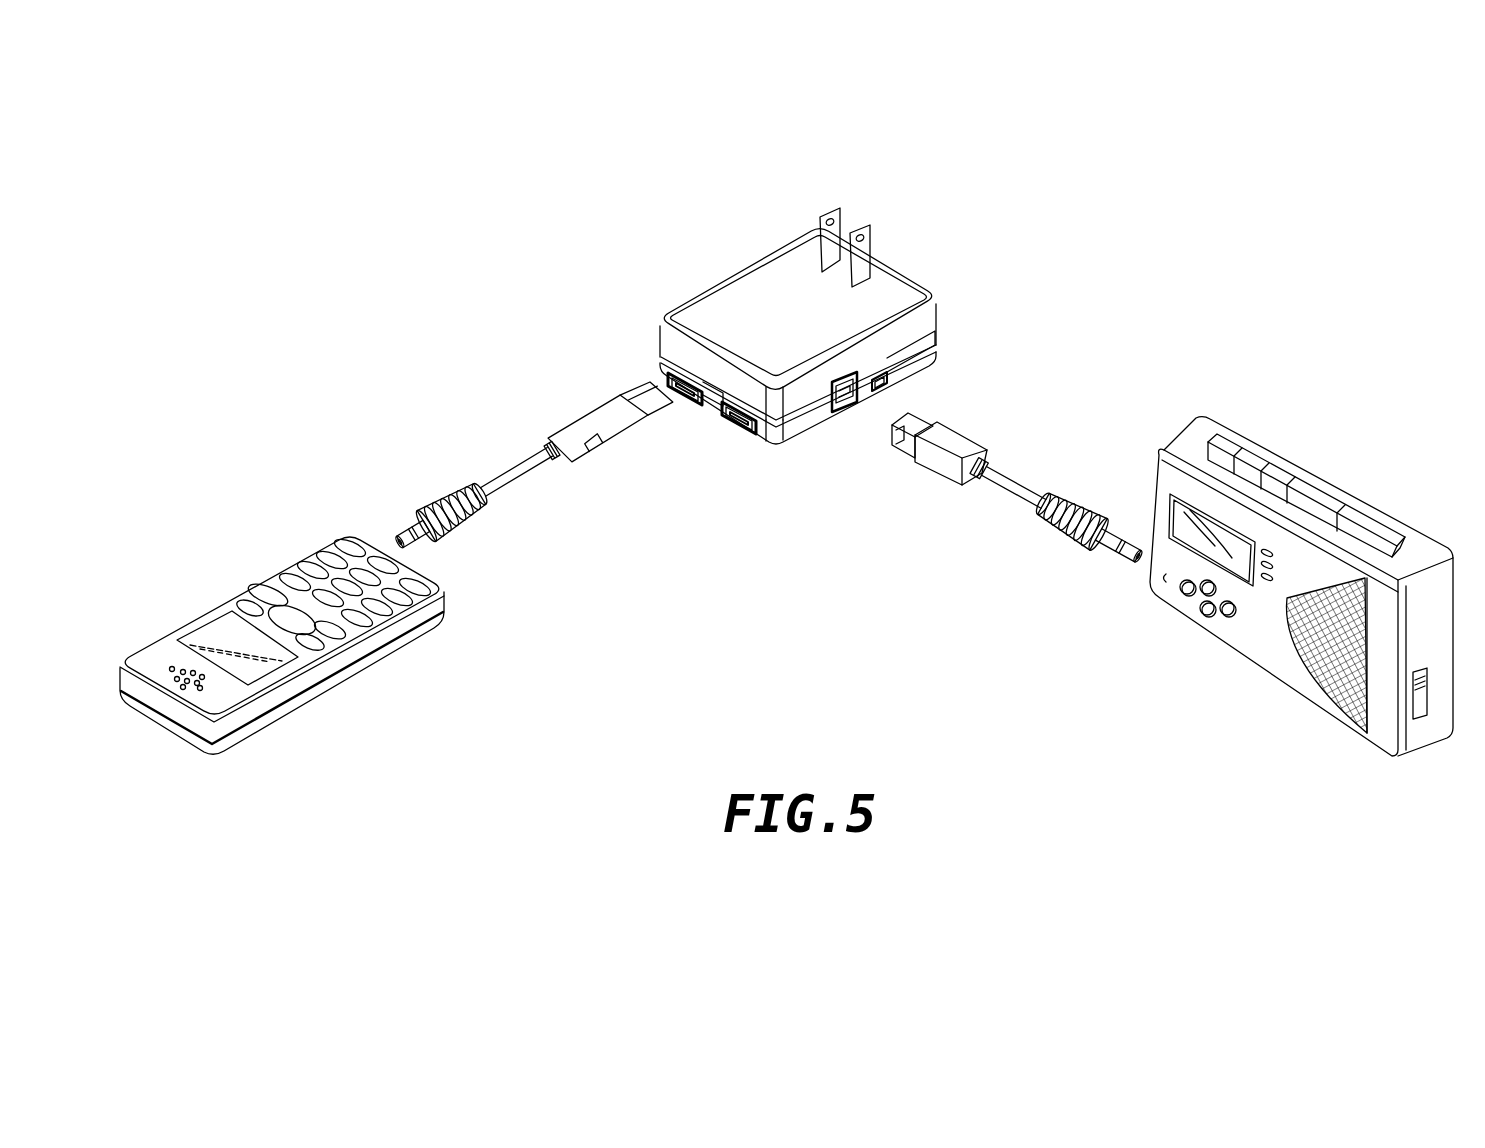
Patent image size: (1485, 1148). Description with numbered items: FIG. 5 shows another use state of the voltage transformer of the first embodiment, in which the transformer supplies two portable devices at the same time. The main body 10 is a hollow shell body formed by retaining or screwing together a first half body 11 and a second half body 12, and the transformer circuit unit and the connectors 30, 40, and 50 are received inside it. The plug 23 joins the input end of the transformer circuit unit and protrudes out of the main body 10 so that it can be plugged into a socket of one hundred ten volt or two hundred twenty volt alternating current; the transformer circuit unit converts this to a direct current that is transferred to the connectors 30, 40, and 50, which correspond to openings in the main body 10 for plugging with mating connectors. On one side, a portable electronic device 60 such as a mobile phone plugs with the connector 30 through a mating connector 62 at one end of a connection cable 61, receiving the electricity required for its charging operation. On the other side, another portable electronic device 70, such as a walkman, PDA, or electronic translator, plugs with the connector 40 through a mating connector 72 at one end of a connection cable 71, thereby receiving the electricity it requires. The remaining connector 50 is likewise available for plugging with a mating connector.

The main body 10 is at (836, 334).
The first half body 11 is at (805, 420).
The second half body 12 is at (760, 280).
The plug 23 is at (825, 212).
The connector 30 is at (693, 397).
The connector 40 is at (843, 397).
The connector 50 is at (888, 379).
The portable electronic device 60 is at (253, 578).
The connection cable 61 is at (490, 480).
The mating connector 62 is at (582, 428).
The portable electronic device 70 is at (1232, 650).
The connection cable 71 is at (1013, 484).
The mating connector 72 is at (957, 442).